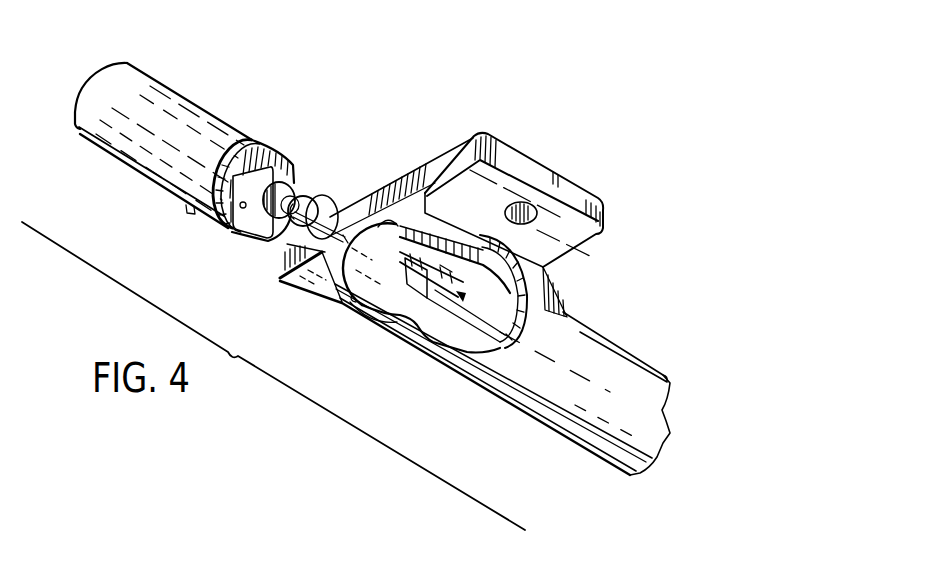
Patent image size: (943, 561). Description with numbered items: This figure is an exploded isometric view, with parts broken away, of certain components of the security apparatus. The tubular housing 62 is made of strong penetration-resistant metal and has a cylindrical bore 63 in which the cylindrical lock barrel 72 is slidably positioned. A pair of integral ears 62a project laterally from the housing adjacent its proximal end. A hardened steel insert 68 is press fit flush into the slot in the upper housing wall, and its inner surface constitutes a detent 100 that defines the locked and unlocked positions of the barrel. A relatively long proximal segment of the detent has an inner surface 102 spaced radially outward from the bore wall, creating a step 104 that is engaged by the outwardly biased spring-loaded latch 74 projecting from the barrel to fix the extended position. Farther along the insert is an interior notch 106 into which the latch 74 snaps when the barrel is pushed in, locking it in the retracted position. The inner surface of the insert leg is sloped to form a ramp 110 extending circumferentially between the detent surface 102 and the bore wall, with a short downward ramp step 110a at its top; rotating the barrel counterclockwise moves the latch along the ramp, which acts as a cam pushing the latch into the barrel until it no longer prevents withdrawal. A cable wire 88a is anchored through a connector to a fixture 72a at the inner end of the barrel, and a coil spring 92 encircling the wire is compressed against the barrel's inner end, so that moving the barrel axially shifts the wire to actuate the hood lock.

The tubular housing 62 is at (487, 378).
The integral ears 62a is at (493, 137).
The cylindrical bore 63 is at (343, 298).
The insert 68 is at (457, 253).
The lock barrel 72 is at (176, 107).
The fixture 72a is at (281, 160).
The spring-loaded latch 74 is at (189, 216).
The cable wire 88a is at (286, 245).
The coil spring 92 is at (336, 205).
The detent 100 is at (462, 301).
The inner surface 102 is at (450, 266).
The step 104 is at (388, 221).
The interior notch 106 is at (512, 333).
The ramp 110 is at (405, 300).
The ramp step 110a is at (441, 225).